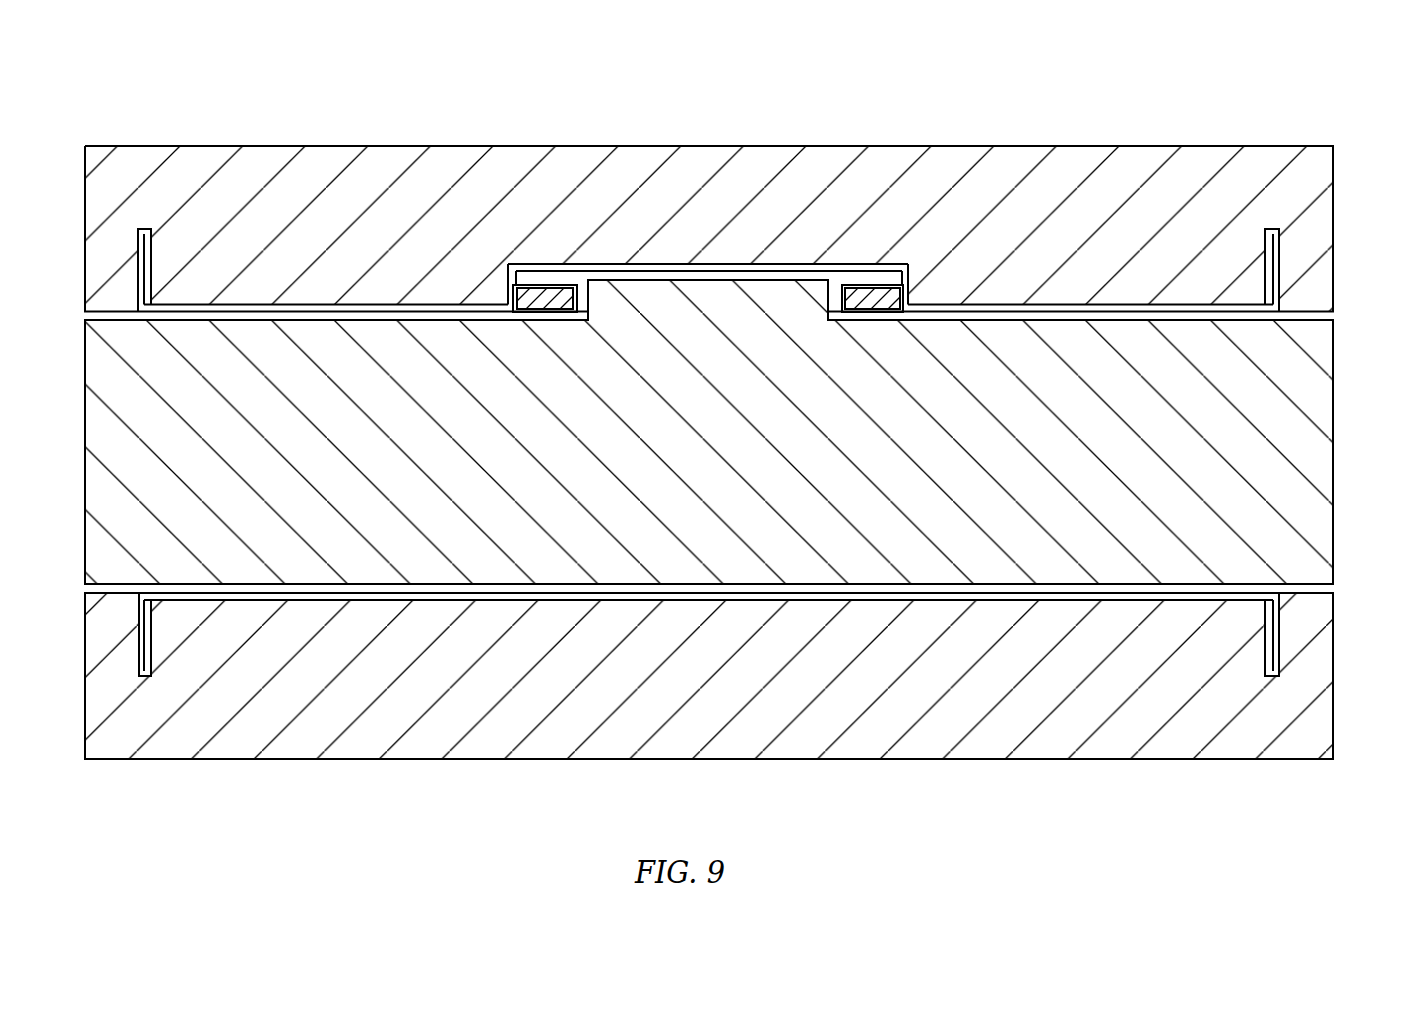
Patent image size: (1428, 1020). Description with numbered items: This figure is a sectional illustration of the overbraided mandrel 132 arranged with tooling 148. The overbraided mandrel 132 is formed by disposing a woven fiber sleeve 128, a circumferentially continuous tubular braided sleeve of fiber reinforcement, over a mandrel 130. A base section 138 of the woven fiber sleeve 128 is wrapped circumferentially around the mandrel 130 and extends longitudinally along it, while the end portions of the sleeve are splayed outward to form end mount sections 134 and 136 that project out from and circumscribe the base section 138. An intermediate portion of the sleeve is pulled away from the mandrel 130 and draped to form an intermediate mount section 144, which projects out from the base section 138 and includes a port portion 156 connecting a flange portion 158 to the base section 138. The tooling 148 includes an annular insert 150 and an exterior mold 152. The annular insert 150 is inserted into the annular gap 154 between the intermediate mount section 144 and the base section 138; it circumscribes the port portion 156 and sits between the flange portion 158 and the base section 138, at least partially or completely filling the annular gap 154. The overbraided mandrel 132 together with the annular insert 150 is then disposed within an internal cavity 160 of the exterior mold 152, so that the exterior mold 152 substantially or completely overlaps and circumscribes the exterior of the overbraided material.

The tooling 148 is at (1293, 116).
The exterior mold 152 is at (1088, 146).
The mandrel 130 is at (720, 496).
The overbraided mandrel 132 is at (1347, 323).
The end mount section 134 is at (146, 268).
The end mount section 136 is at (1271, 267).
The base section 138 is at (322, 305).
The woven fiber sleeve 128 is at (962, 307).
The internal cavity 160 is at (573, 603).
The intermediate mount section 144 is at (833, 267).
The flange portion 158 is at (547, 264).
The port portion 156 is at (577, 299).
The annular insert 150 is at (545, 315).
The annular gap 154 is at (528, 315).